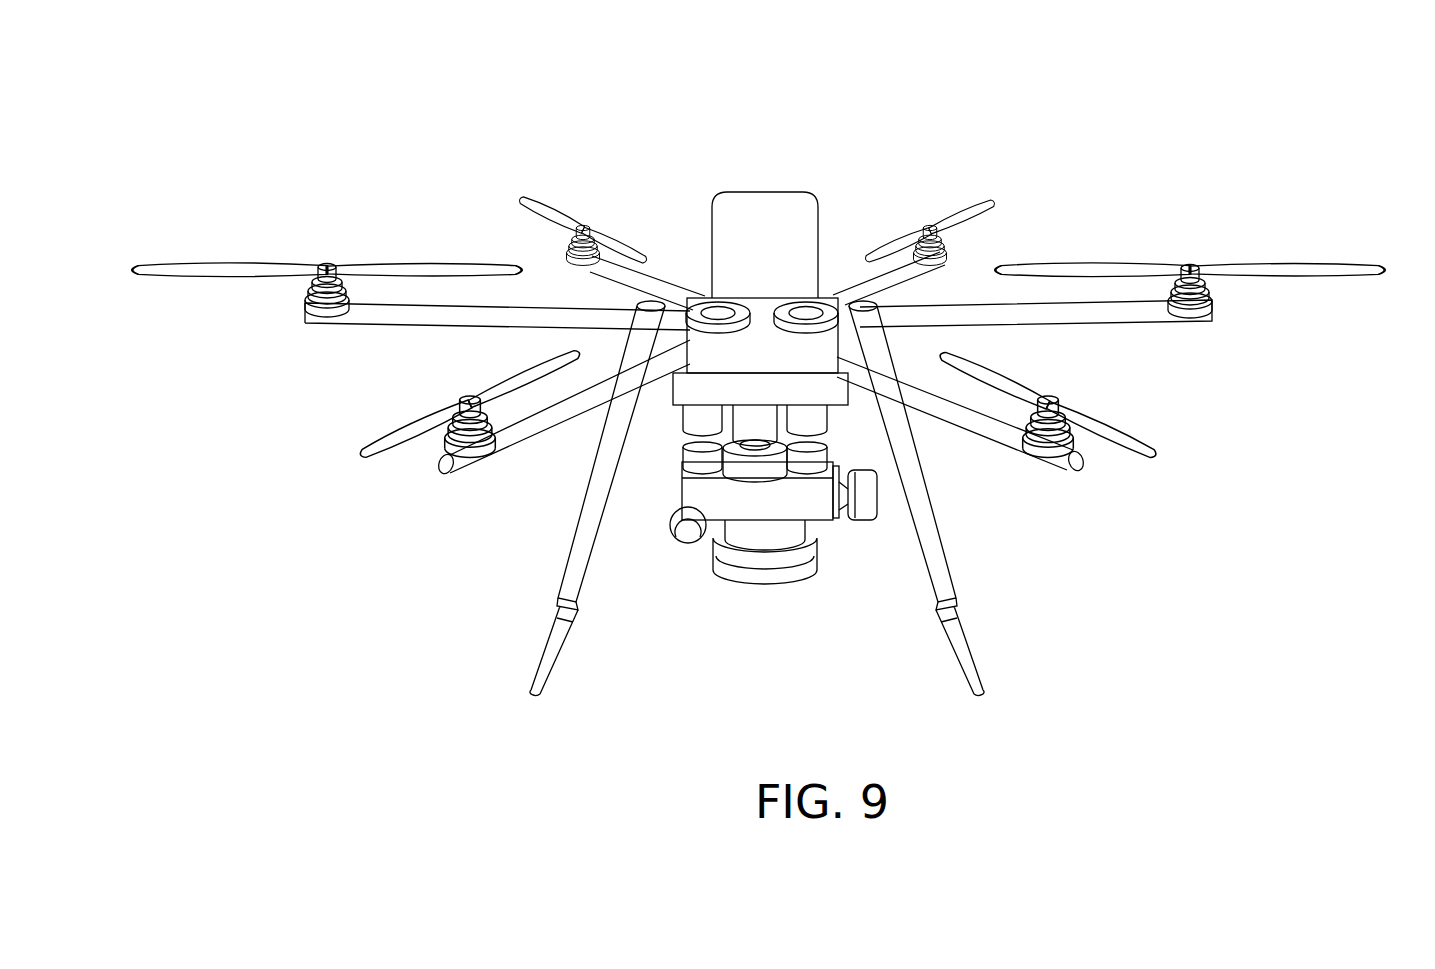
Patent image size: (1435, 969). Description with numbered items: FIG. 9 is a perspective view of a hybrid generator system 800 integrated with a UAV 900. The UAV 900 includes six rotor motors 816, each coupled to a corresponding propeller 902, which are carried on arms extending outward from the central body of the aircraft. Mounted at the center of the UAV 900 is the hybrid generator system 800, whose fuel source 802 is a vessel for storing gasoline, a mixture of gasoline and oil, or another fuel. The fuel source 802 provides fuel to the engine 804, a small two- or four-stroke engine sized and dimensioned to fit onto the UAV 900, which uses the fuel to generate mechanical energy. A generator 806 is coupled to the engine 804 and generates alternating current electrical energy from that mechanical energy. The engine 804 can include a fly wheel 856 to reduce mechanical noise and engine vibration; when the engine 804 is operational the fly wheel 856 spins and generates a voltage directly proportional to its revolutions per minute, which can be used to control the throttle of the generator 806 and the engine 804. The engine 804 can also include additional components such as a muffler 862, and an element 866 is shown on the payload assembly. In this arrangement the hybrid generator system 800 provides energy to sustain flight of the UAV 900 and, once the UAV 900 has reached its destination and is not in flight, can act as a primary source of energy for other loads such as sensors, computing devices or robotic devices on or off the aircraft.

The UAV 900 is at (404, 136).
The hybrid generator system 800 is at (802, 129).
The fuel source 802 is at (818, 214).
The engine 804 is at (766, 626).
The generator 806 is at (770, 428).
The rotor motor 816 is at (310, 313).
The fly wheel 856 is at (838, 517).
The muffler 862 is at (672, 538).
The camera lens 866 is at (728, 566).
The propeller 902 is at (195, 266).